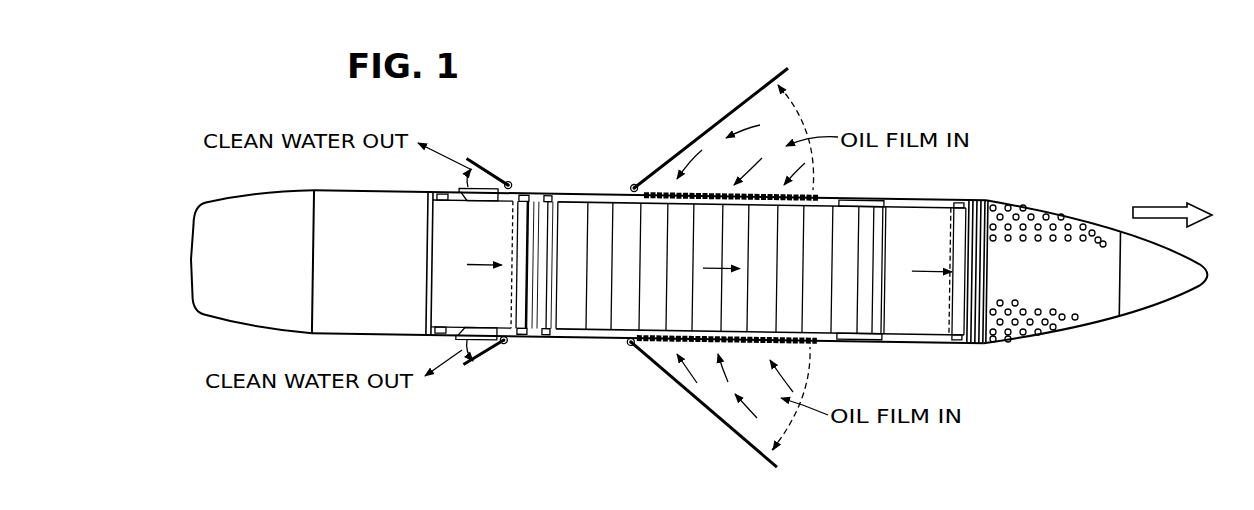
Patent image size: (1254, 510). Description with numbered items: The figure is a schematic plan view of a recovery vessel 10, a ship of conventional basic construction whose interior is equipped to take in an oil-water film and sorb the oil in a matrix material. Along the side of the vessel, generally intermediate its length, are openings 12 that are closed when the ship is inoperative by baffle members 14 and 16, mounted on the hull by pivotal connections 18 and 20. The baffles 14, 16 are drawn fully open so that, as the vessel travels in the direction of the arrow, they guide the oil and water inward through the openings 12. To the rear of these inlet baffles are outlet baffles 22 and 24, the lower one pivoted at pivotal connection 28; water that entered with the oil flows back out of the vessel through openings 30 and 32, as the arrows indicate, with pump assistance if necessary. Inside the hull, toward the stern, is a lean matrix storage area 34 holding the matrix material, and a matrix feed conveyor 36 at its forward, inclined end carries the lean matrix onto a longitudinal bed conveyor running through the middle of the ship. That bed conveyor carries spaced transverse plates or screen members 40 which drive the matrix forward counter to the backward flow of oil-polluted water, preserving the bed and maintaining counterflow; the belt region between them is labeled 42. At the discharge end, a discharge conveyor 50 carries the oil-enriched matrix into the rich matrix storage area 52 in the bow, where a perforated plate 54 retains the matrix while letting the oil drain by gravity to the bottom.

The recovery vessel 10 is at (1008, 194).
The openings 12 is at (800, 192).
The baffle member 14 is at (750, 93).
The baffle member 16 is at (715, 417).
The pivotal connection 18 is at (630, 184).
The pivotal connection 20 is at (629, 346).
The outlet baffle 22 is at (483, 168).
The outlet baffle 24 is at (478, 355).
The pivotal connection 28 is at (509, 344).
The opening 30 is at (478, 198).
The opening 32 is at (483, 327).
The lean matrix storage area 34 is at (367, 217).
The matrix feed conveyor 36 is at (442, 242).
The transverse plates or screen members 40 is at (776, 313).
The conveyor belt 42 is at (600, 222).
The discharge conveyor 50 is at (937, 223).
The rich matrix storage area 52 is at (1047, 287).
The perforated plate 54 is at (1043, 332).